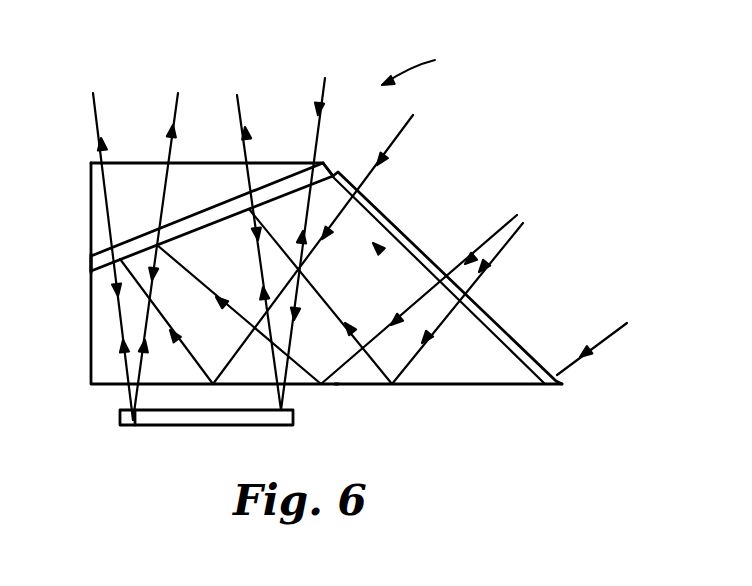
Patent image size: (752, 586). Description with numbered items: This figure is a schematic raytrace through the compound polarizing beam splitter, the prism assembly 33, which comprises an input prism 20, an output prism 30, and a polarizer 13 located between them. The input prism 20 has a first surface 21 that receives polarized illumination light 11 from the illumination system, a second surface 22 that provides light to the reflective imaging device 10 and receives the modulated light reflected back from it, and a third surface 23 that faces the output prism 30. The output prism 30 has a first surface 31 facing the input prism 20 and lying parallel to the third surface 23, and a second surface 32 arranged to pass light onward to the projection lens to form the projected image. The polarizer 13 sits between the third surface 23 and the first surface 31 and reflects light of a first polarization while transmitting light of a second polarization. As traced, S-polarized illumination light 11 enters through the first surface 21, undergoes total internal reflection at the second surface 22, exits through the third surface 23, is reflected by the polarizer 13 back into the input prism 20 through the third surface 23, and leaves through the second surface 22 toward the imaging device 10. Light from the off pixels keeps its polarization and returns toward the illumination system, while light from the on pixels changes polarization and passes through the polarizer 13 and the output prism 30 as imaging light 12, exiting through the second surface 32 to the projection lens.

The imaging device 10 is at (207, 421).
The polarized illumination light 11 is at (400, 135).
The imaging light 12 is at (95, 105).
The polarizer 13 is at (98, 265).
The input prism 20 is at (491, 378).
The first surface of input prism 21 is at (507, 332).
The second surface of input prism 22 is at (427, 385).
The third surface of input prism 23 is at (192, 232).
The output prism 30 is at (98, 198).
The first surface of output prism 31 is at (185, 220).
The second surface of output prism 32 is at (205, 162).
The prism assembly 33 is at (424, 66).